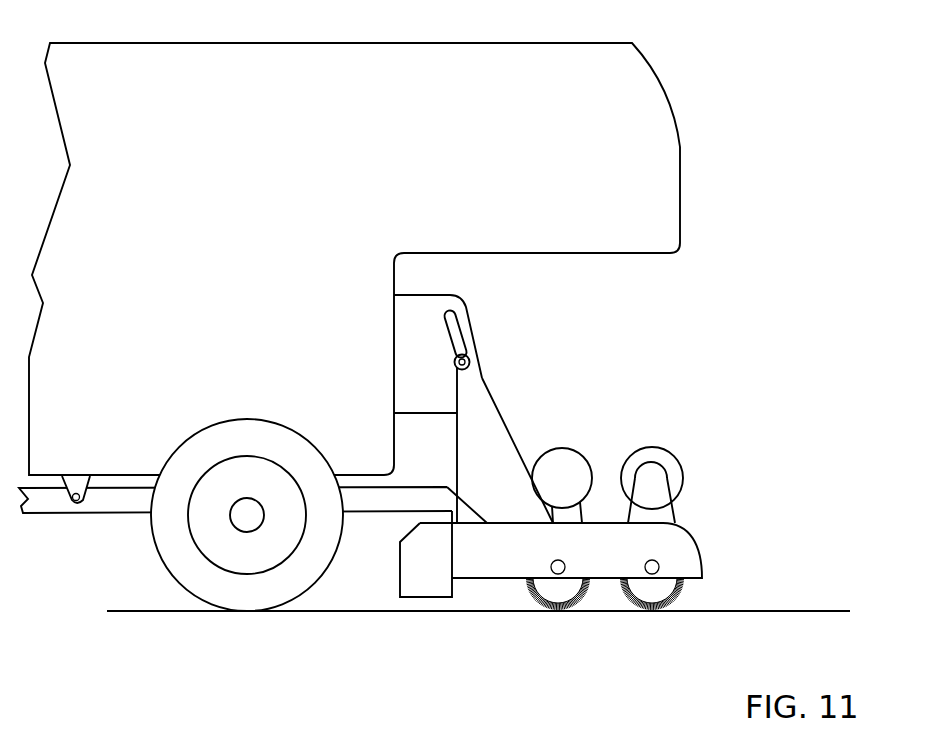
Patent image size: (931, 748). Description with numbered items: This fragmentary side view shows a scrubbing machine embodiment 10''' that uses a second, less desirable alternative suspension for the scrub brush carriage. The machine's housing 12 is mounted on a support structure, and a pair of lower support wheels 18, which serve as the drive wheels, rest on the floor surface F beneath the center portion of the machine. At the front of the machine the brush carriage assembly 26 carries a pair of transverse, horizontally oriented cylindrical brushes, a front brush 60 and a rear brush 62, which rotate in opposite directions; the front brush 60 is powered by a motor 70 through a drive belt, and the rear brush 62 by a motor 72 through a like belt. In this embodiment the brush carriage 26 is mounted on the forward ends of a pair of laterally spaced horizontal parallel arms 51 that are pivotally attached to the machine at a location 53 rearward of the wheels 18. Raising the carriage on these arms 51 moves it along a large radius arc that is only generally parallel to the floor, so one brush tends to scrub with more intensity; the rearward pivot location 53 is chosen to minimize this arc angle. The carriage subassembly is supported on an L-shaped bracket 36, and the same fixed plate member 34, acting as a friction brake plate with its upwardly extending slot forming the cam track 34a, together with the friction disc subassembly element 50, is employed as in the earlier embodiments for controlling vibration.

The scrubbing machine embodiment 10''' is at (441, 342).
The housing 12 is at (647, 55).
The lower support wheels 18 is at (243, 593).
The brush carriage assembly 26 is at (695, 538).
The fixed plate member 34 is at (417, 295).
The cam track 34a is at (455, 329).
The L-shaped bracket 36 is at (484, 404).
The friction disc subassembly element 50 is at (470, 358).
The horizontal parallel arms 51 is at (117, 505).
The pivotal attachment location 53 is at (65, 494).
The front brush 60 is at (653, 587).
The rear brush 62 is at (555, 590).
The motor 70 is at (675, 473).
The motor 72 is at (563, 463).
The floor surface F is at (772, 608).